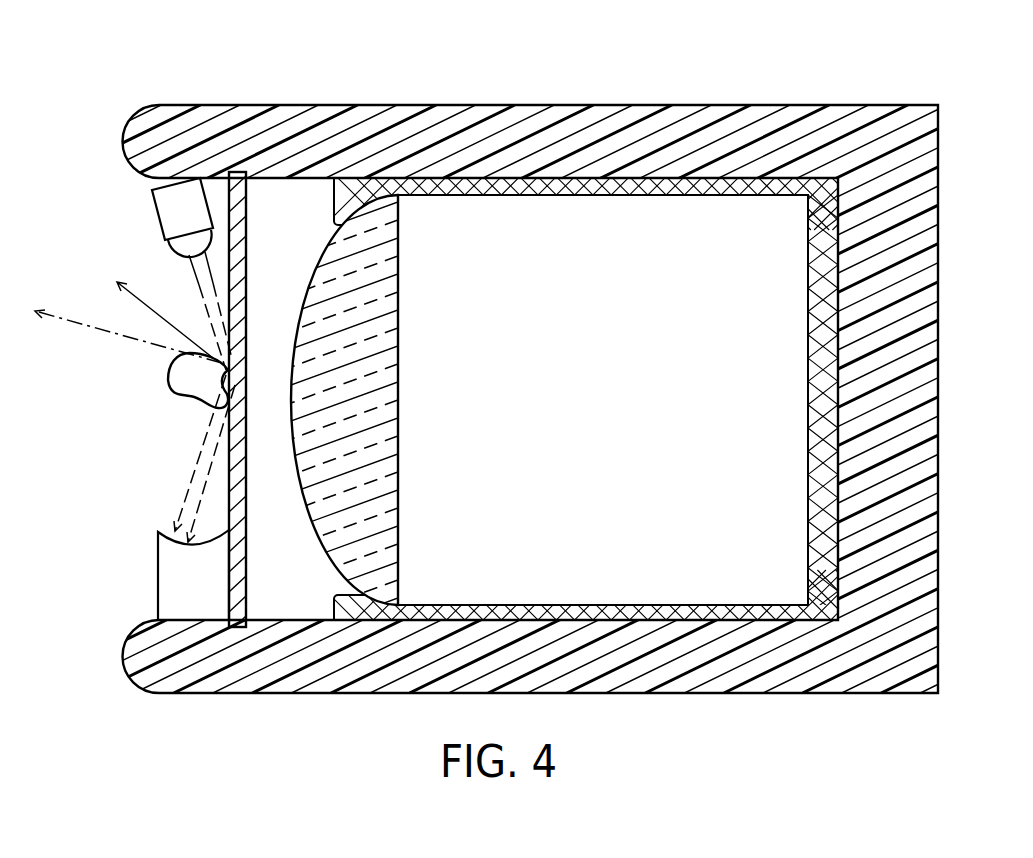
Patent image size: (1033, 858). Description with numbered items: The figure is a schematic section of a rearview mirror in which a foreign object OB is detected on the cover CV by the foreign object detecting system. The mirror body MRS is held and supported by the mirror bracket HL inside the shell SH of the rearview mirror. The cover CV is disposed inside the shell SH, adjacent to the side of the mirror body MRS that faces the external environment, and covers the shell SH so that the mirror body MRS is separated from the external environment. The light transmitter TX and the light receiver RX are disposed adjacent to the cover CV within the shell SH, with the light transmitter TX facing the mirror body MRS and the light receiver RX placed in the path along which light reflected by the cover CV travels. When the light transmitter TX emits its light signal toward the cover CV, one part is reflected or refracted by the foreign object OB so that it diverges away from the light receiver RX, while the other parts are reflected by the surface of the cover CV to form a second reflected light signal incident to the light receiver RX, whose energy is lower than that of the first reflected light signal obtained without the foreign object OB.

The shell SH is at (573, 130).
The mirror bracket HL is at (388, 186).
The mirror body MRS is at (330, 288).
The cover CV is at (237, 172).
The light transmitter TX is at (177, 212).
The foreign object OB is at (172, 388).
The light receiver RX is at (182, 584).